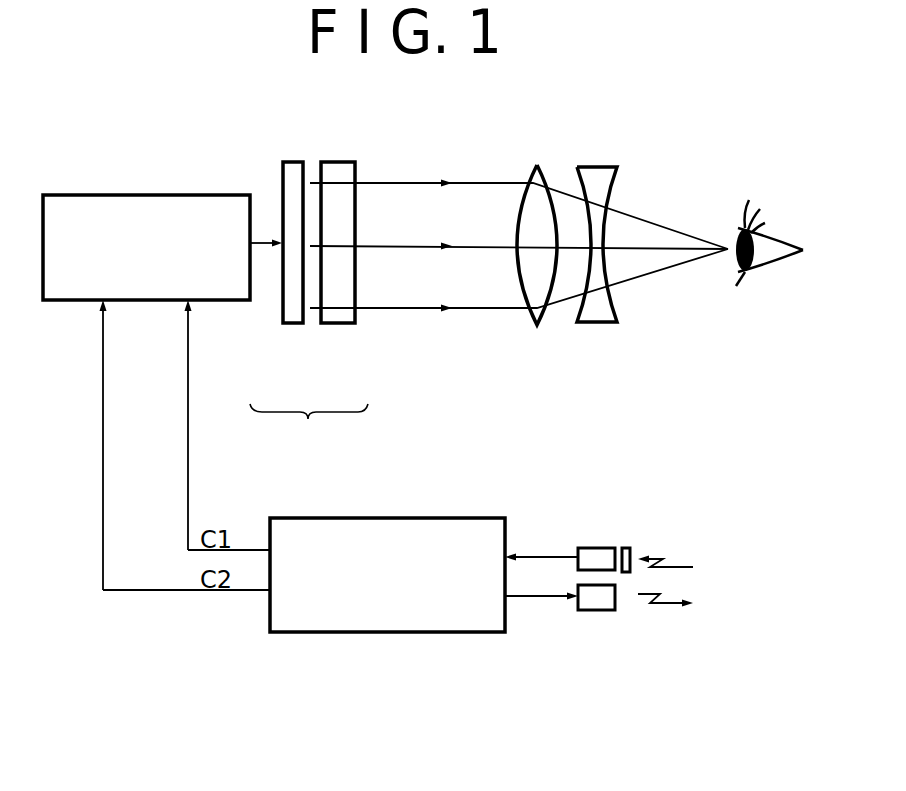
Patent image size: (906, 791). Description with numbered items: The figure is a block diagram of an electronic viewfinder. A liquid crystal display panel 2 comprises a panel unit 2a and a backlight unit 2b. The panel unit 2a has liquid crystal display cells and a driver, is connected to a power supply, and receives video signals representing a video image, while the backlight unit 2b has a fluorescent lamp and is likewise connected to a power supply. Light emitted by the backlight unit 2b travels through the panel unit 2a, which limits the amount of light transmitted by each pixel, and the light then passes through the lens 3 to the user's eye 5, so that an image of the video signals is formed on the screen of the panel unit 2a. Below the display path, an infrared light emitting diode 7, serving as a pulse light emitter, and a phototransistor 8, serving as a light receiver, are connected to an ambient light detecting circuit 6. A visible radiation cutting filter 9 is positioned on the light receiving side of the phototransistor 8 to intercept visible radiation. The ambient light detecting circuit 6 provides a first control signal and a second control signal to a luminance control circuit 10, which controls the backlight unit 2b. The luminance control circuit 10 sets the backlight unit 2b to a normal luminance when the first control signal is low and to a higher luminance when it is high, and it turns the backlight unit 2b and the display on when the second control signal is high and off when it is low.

The luminance control circuit 10 is at (163, 195).
The liquid crystal display panel 2 is at (316, 449).
The panel unit 2a is at (339, 325).
The backlight unit 2b is at (289, 325).
The lens 3 is at (598, 315).
The user's eye 5 is at (752, 278).
The ambient light detecting circuit 6 is at (378, 632).
The infrared light emitting diode 7 is at (594, 612).
The phototransistor 8 is at (594, 552).
The visible radiation cutting filter 9 is at (626, 548).